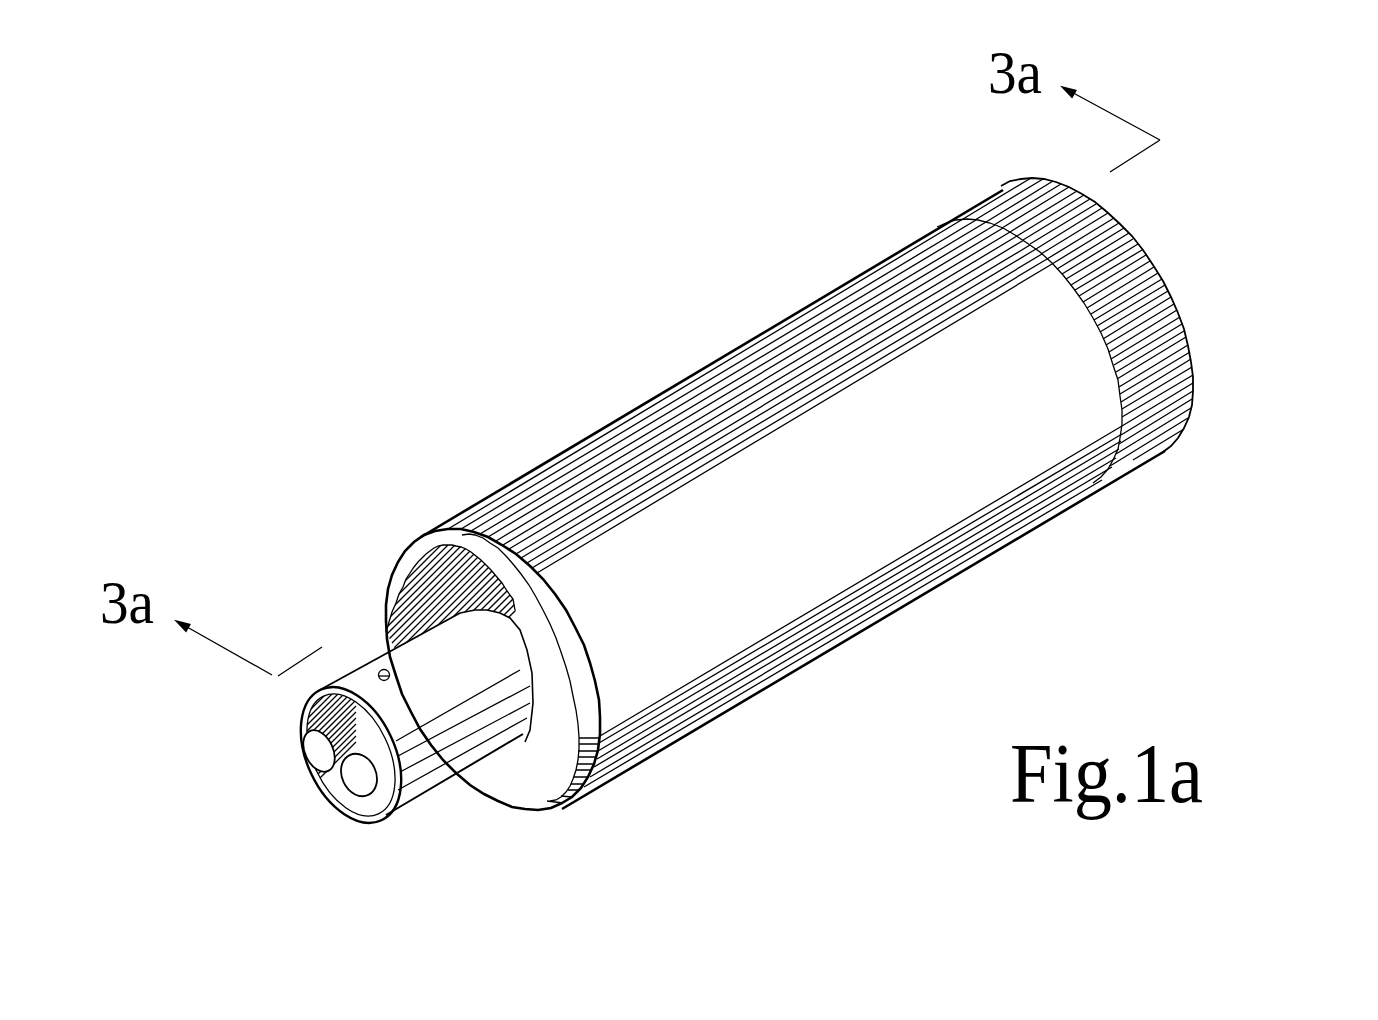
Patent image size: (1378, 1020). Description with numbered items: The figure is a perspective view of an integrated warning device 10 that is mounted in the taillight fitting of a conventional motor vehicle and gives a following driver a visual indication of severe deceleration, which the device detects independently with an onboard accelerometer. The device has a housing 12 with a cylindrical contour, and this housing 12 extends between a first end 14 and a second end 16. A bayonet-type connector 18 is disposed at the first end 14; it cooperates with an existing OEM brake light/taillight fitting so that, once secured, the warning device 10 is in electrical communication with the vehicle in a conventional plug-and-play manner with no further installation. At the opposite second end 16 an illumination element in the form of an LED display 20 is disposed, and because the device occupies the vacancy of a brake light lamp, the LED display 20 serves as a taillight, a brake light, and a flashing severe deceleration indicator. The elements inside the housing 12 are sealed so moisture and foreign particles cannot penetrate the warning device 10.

The warning device 10 is at (1333, 150).
The housing 12 is at (707, 641).
The first end 14 is at (527, 777).
The second end 16 is at (1181, 311).
The bayonet-type connector 18 is at (432, 777).
The LED display 20 is at (1057, 165).